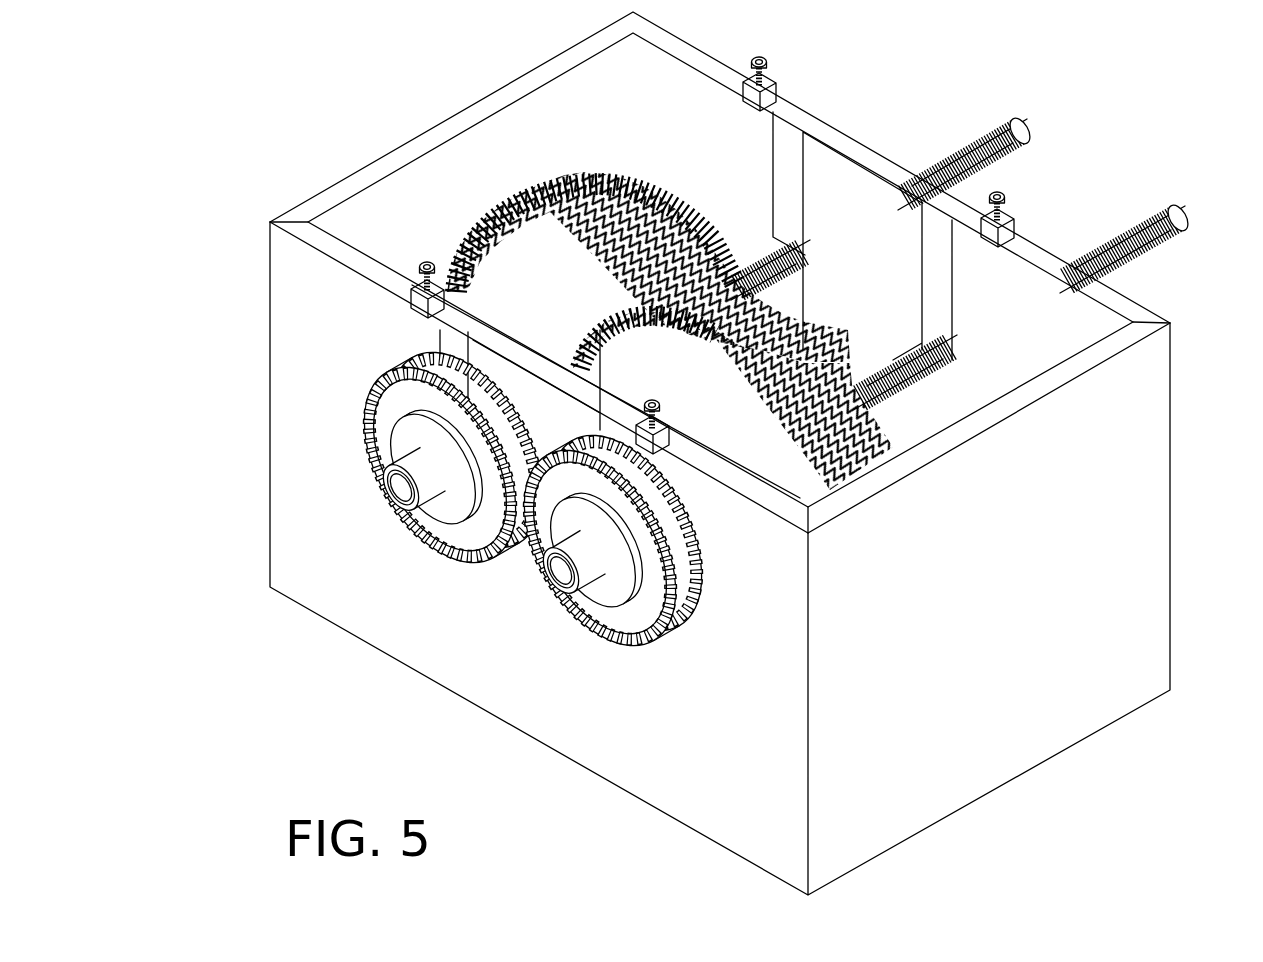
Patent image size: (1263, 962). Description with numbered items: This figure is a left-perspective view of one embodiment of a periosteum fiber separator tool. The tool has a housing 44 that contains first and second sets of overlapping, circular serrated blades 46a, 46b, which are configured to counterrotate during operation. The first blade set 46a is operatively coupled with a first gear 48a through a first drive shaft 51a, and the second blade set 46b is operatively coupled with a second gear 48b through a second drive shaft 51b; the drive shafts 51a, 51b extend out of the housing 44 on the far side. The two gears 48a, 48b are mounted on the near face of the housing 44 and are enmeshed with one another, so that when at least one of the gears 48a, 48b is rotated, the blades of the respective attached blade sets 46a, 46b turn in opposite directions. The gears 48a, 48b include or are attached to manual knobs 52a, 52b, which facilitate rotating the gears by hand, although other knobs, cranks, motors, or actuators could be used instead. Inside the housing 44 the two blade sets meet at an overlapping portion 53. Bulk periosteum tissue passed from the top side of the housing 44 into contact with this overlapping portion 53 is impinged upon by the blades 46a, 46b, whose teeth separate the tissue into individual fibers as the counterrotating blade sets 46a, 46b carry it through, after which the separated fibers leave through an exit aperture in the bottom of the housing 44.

The housing 44 is at (1148, 323).
The first blade set 46a is at (893, 440).
The second blade set 46b is at (568, 162).
The first gear 48a is at (613, 636).
The second gear 48b is at (388, 520).
The first drive shaft 51a is at (1163, 206).
The second drive shaft 51b is at (1013, 122).
The manual knob 52a is at (587, 576).
The manual knob 52b is at (437, 497).
The overlapping portion 53 is at (760, 256).